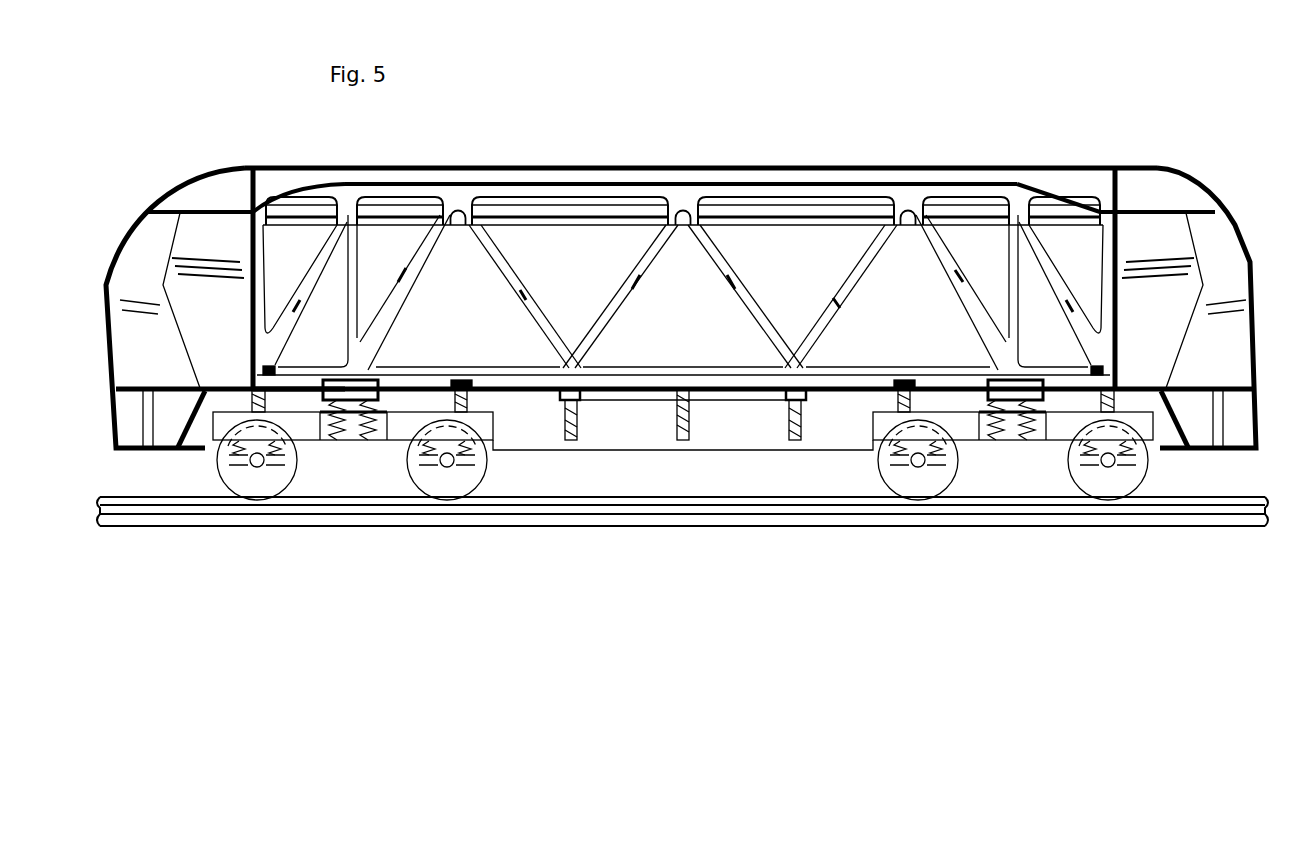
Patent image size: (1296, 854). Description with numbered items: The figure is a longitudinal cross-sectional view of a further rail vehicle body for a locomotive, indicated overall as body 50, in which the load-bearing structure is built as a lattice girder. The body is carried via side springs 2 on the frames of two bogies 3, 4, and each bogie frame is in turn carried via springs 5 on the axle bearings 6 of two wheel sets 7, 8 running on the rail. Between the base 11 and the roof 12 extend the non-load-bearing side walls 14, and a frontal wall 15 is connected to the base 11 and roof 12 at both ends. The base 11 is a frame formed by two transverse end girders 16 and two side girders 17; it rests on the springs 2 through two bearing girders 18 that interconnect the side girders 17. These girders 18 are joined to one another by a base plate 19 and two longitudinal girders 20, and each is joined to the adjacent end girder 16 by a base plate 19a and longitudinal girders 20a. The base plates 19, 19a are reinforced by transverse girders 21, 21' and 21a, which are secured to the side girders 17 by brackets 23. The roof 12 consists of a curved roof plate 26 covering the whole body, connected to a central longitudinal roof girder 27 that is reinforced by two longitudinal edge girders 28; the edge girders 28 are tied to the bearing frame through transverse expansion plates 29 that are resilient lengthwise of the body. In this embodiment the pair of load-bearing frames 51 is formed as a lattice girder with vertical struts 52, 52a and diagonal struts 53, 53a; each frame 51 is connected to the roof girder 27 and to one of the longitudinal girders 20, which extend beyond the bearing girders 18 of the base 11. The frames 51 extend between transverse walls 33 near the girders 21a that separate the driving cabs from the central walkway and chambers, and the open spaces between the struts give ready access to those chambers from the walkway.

The side springs 2 is at (352, 446).
The bogie 3 is at (310, 445).
The bogie 4 is at (965, 445).
The springs 5 is at (235, 456).
The axle bearings 6 is at (245, 478).
The wheel set 7 is at (276, 482).
The wheel set 8 is at (430, 487).
The base 11 is at (653, 456).
The roof 12 is at (683, 160).
The side walls 14 is at (178, 233).
The frontal wall 15 is at (148, 249).
The end girders 16 is at (150, 450).
The side girders 17 is at (721, 451).
The girders 18 is at (377, 380).
The base plate 19 is at (716, 386).
The longitudinal girders 20 is at (645, 386).
The base plate 19a is at (300, 386).
The longitudinal girders 20a is at (228, 386).
The transverse girder 21 is at (683, 415).
The transverse girder 21' is at (698, 371).
The transverse girder 21a is at (278, 362).
The brackets 23 is at (265, 401).
The roof plate 26 is at (728, 166).
The roof girder 27 is at (774, 181).
The edge girders 28 is at (816, 212).
The expansion plates 29 is at (325, 233).
The transverse walls 33 is at (252, 300).
The car body shell 50 is at (570, 155).
The load-bearing frame 51 is at (626, 260).
The vertical struts 52 is at (358, 247).
The vertical struts 52a is at (250, 246).
The diagonal struts 53 is at (412, 282).
The diagonal struts 53a is at (308, 272).